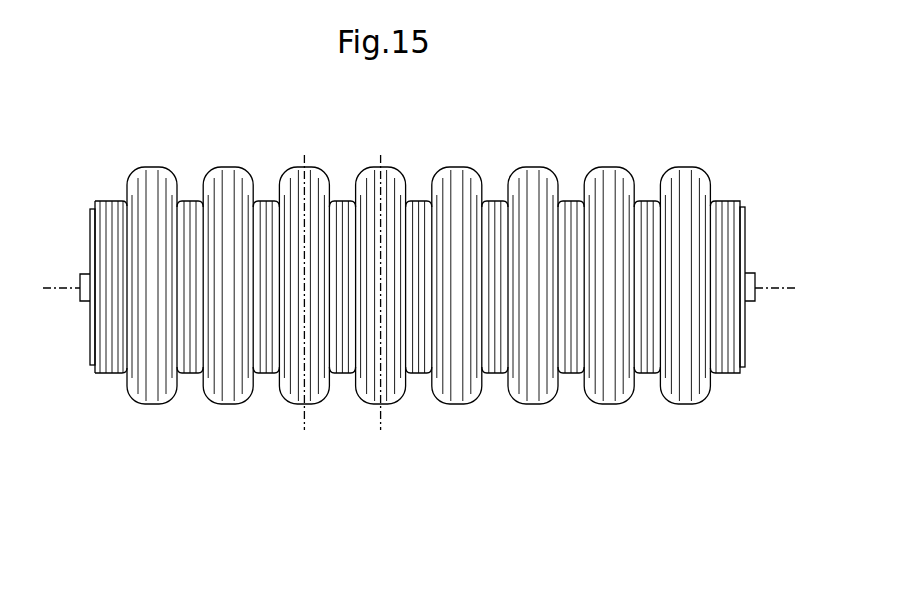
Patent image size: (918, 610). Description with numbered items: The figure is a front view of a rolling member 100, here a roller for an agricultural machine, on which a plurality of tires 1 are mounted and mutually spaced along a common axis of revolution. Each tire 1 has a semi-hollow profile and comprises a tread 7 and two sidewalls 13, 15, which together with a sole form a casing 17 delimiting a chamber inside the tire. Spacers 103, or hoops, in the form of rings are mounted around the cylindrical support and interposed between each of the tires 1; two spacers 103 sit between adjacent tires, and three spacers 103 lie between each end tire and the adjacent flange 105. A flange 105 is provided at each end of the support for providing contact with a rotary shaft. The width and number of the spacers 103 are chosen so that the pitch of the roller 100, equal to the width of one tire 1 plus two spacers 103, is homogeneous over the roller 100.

The rolling member 100 is at (183, 135).
The sidewall 13 is at (258, 181).
The sidewall 15 is at (196, 388).
The casing 17 is at (533, 155).
The tire 1 is at (683, 146).
The tread 7 is at (533, 397).
The spacer 103 is at (570, 371).
The flange 105 is at (745, 218).